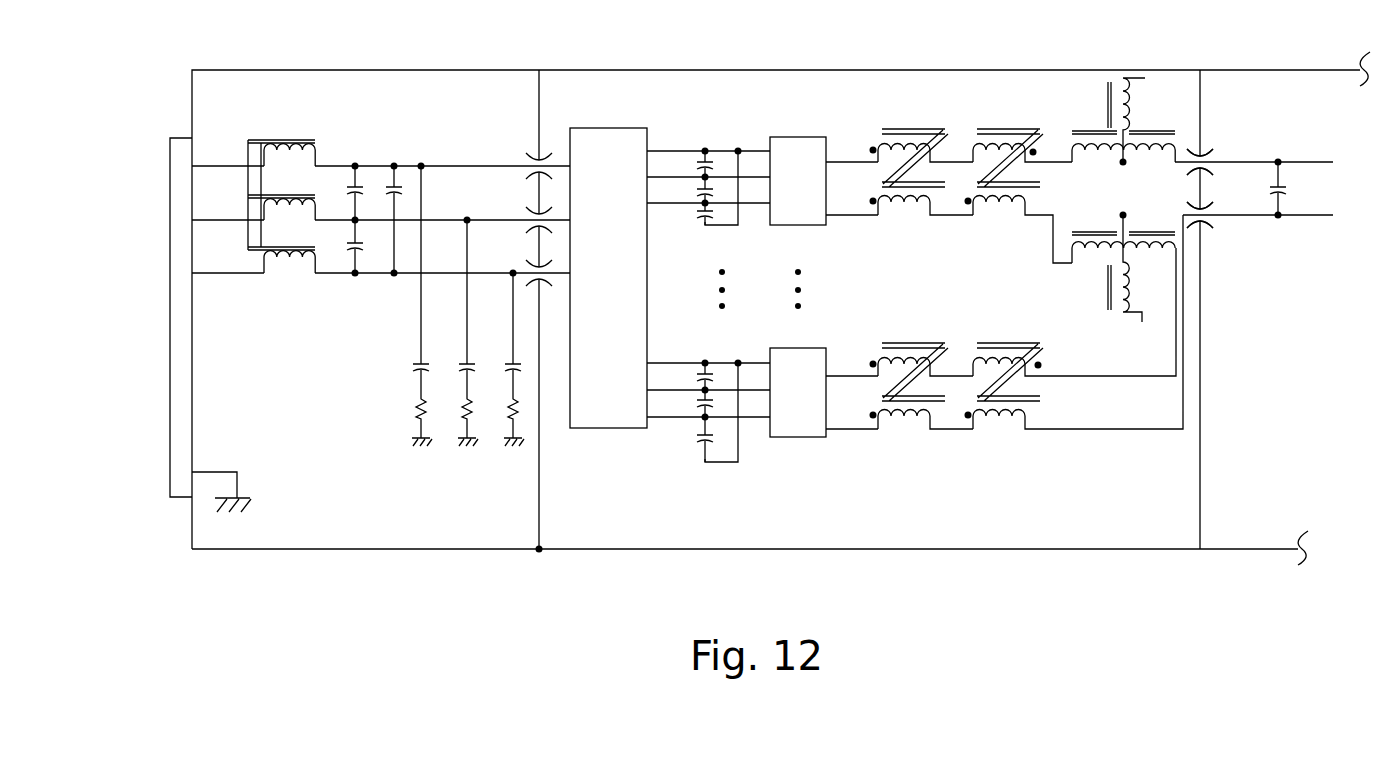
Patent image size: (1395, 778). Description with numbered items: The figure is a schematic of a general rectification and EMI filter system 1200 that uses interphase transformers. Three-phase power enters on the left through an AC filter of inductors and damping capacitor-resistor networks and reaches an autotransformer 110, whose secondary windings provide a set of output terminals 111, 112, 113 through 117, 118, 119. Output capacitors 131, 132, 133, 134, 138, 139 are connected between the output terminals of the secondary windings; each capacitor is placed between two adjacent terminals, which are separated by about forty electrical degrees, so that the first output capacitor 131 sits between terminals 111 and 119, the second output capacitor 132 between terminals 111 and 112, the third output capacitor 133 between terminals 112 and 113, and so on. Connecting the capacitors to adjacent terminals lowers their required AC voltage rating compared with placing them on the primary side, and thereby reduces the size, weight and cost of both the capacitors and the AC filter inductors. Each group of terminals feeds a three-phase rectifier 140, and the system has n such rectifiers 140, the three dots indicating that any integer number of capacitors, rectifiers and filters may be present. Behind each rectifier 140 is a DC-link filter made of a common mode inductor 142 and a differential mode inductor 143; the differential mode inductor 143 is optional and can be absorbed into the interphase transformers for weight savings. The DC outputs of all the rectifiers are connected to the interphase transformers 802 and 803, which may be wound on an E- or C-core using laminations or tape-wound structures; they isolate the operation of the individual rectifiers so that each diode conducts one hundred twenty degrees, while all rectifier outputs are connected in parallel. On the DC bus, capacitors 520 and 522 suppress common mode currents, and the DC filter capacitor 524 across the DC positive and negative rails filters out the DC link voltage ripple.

The rectification and EMI filter system 1200 is at (150, 95).
The autotransformer 110 is at (630, 258).
The output terminal 111 is at (685, 151).
The output terminal 112 is at (685, 177).
The output terminal 113 is at (685, 203).
The output terminal 117 is at (685, 363).
The output terminal 118 is at (685, 390).
The output terminal 119 is at (685, 417).
The first output capacitor 131 is at (700, 437).
The second output capacitor 132 is at (709, 162).
The third output capacitor 133 is at (700, 190).
The output capacitor 134 is at (700, 217).
The output capacitor 138 is at (700, 376).
The output capacitor 139 is at (712, 404).
The rectifier device 140 is at (801, 137).
The DC-link common mode inductor 142 is at (908, 208).
The differential mode inductor 143 is at (1004, 208).
The interphase transformer 802 is at (1102, 103).
The interphase transformer 803 is at (1100, 287).
The capacitor 520 is at (1206, 154).
The capacitor 522 is at (1208, 224).
The DC filter capacitor 524 is at (1300, 170).